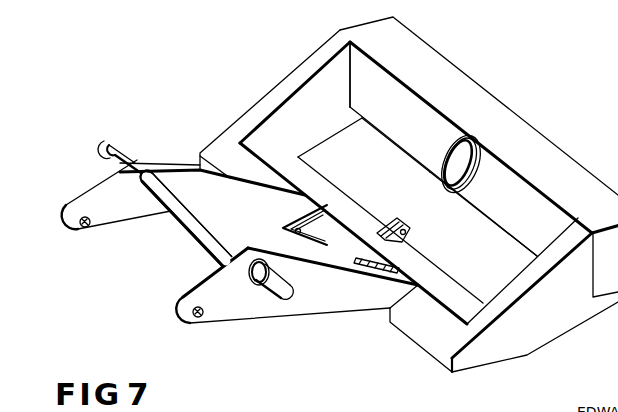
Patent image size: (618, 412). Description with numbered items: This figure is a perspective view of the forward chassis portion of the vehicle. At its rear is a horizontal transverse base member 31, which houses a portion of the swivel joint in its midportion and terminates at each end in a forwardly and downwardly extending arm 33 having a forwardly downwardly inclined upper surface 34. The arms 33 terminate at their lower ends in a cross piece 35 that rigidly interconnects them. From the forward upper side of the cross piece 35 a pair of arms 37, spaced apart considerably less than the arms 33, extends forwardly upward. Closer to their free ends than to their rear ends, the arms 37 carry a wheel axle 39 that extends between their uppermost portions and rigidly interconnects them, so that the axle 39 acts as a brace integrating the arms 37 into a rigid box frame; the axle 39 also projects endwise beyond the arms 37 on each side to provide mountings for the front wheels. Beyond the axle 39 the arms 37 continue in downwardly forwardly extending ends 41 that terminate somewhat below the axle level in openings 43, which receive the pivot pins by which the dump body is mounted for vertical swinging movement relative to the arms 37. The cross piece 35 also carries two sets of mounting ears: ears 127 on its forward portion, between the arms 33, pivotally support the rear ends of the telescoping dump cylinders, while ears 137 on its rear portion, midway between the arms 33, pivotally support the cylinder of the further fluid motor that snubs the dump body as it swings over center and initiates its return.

The rear horizontal transverse base member 31 is at (540, 153).
The arms 33 is at (297, 100).
The forwardly downwardly inclined upper surfaces 34 is at (244, 120).
The cross piece 35 is at (434, 284).
The arms 37 is at (181, 183).
The wheel axle 39 is at (222, 239).
The downwardly forwardly extending ends 41 is at (138, 212).
The openings 43 is at (85, 224).
The ears 127 is at (370, 263).
The ears 137 is at (402, 236).